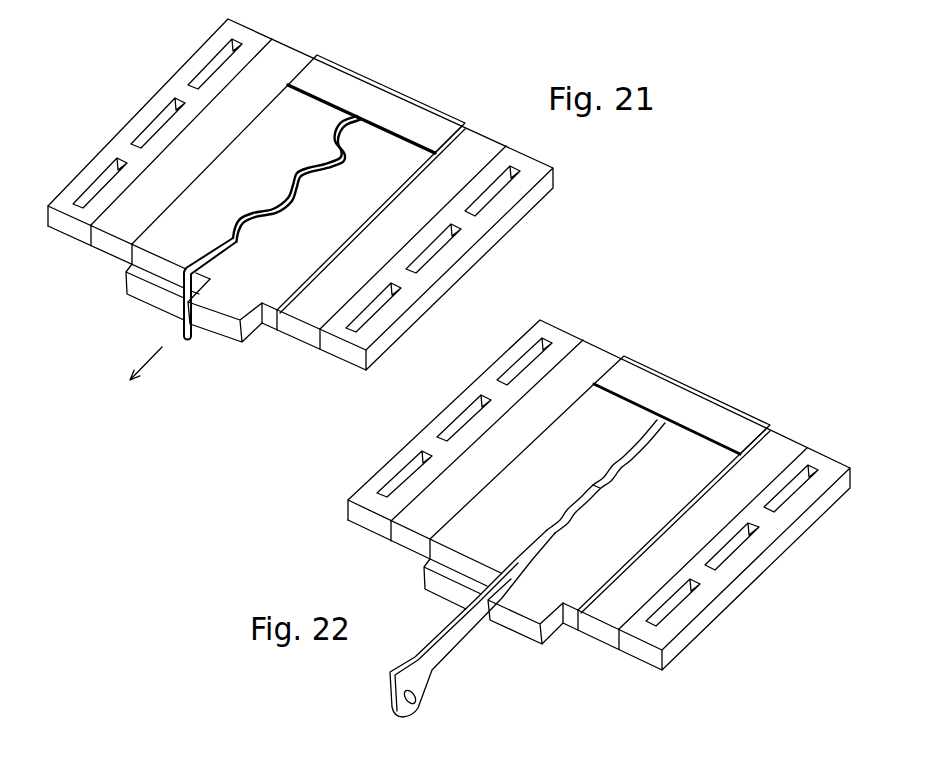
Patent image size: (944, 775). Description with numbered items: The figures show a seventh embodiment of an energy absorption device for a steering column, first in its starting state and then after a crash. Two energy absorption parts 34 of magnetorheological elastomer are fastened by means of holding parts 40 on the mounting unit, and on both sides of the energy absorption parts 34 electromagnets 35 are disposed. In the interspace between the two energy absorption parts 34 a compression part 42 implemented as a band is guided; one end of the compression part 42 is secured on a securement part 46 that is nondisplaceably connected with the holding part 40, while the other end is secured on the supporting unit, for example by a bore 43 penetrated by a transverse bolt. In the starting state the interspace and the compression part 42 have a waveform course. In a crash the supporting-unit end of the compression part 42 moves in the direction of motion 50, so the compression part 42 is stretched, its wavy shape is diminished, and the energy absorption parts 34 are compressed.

In FIG. 21, the energy absorption parts 34 is at (303, 113).
In FIG. 22, the energy absorption parts 34 is at (607, 408).
In FIG. 21, the electromagnets 35 is at (158, 187).
In FIG. 22, the electromagnets 35 is at (593, 358).
In FIG. 21, the holding parts 40 is at (182, 90).
In FIG. 22, the holding parts 40 is at (428, 443).
In FIG. 21, the compression part 42 is at (215, 257).
In FIG. 22, the compression part 42 is at (475, 625).
In FIG. 22, the bore 43 is at (418, 703).
In FIG. 21, the securement part 46 is at (382, 103).
In FIG. 22, the securement part 46 is at (690, 403).
In FIG. 21, the direction of motion 50 is at (150, 383).